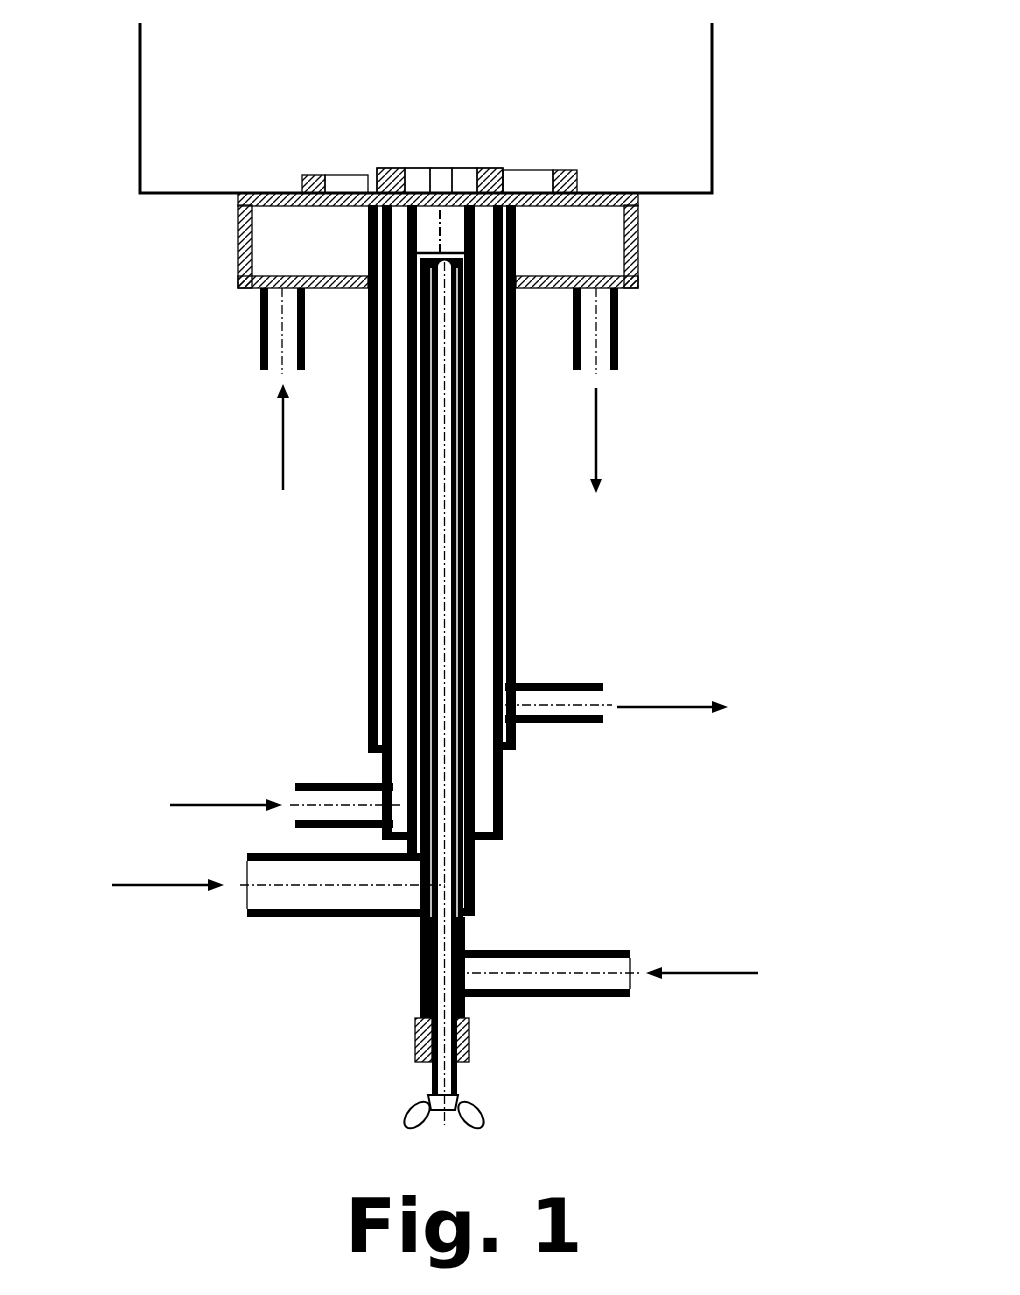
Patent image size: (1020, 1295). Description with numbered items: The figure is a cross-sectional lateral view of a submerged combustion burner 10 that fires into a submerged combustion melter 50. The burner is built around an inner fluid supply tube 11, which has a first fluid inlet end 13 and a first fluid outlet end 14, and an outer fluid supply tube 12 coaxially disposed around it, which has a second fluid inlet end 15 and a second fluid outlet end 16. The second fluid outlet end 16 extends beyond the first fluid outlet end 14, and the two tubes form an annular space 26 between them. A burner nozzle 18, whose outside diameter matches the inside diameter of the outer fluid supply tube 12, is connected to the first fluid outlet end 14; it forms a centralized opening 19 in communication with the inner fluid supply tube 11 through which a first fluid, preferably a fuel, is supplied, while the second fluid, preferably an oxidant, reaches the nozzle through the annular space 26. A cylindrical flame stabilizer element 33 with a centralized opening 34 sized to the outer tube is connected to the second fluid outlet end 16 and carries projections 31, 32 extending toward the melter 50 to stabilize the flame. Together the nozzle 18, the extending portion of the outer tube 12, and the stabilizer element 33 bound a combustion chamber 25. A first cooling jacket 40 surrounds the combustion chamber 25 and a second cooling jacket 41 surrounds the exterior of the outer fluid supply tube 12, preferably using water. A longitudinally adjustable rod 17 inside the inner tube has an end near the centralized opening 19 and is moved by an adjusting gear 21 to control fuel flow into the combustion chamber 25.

The submerged combustion burner 10 is at (724, 121).
The inner fluid supply tube 11 is at (421, 938).
The outer fluid supply tube 12 is at (475, 868).
The first fluid inlet end 13 is at (466, 926).
The first fluid outlet end 14 is at (490, 260).
The second fluid inlet end 15 is at (475, 860).
The second fluid outlet end 16 is at (378, 188).
The longitudinally adjustable rod 17 is at (475, 537).
The burner nozzle 18 is at (373, 214).
The centralized opening 19 is at (445, 228).
The adjusting gear 21 is at (470, 1112).
The combustion chamber 25 is at (450, 212).
The annular space 26 is at (407, 512).
The projection 31 is at (525, 170).
The projection 32 is at (410, 190).
The cylindrical flame stabilizer element 33 is at (303, 184).
The centralized opening 34 is at (414, 168).
The first cooling jacket 40 is at (642, 225).
The second cooling jacket 41 is at (368, 582).
The submerged combustion melter 50 is at (140, 78).